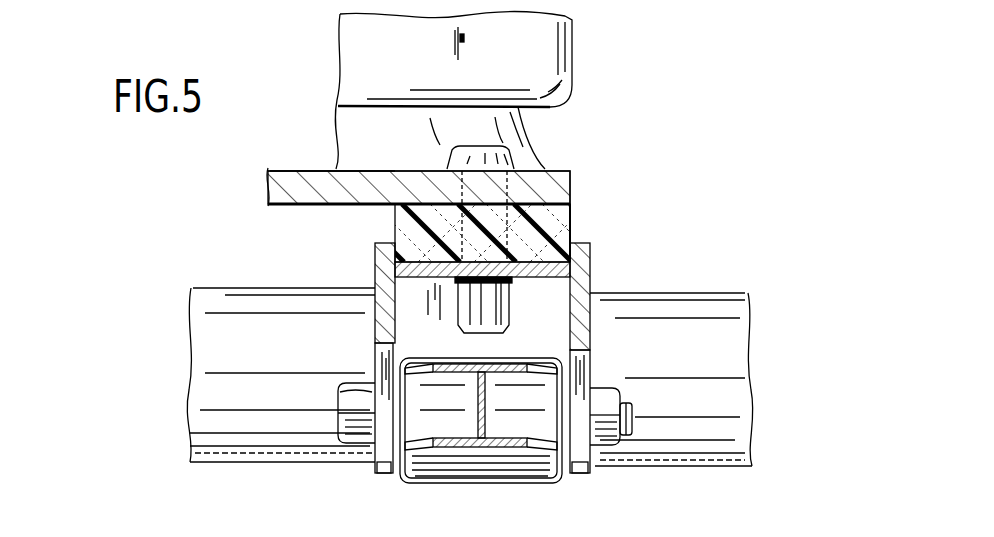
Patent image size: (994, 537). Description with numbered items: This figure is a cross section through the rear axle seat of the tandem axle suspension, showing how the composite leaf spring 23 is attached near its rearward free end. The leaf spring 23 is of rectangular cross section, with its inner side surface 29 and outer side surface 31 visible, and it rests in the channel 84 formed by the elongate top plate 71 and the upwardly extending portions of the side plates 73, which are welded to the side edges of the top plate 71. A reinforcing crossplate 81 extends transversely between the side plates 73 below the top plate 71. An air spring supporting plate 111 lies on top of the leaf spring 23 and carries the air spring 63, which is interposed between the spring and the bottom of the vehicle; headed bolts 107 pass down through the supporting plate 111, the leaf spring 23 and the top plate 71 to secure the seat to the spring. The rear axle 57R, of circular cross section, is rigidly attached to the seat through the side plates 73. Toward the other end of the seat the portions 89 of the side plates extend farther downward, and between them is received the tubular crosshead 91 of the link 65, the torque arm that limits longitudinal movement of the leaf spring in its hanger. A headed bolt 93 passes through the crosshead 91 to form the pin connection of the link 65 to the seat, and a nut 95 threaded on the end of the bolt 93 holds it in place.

The composite leaf spring 23 is at (573, 206).
The inner side surface 29 is at (397, 219).
The outer side surface 31 is at (574, 226).
The rear axle 57R is at (700, 293).
The air spring 63 is at (538, 50).
The link 65 is at (455, 448).
The top plate 71 is at (540, 285).
The side plates 73 is at (375, 254).
The reinforcing crossplate 81 is at (418, 322).
The channel 84 is at (576, 260).
The side plate portions 89 is at (380, 474).
The tubular crosshead 91 is at (487, 484).
The headed bolt 93 is at (338, 400).
The nut 95 is at (612, 440).
The headed bolts 107 is at (508, 158).
The air spring supporting plate 111 is at (283, 190).